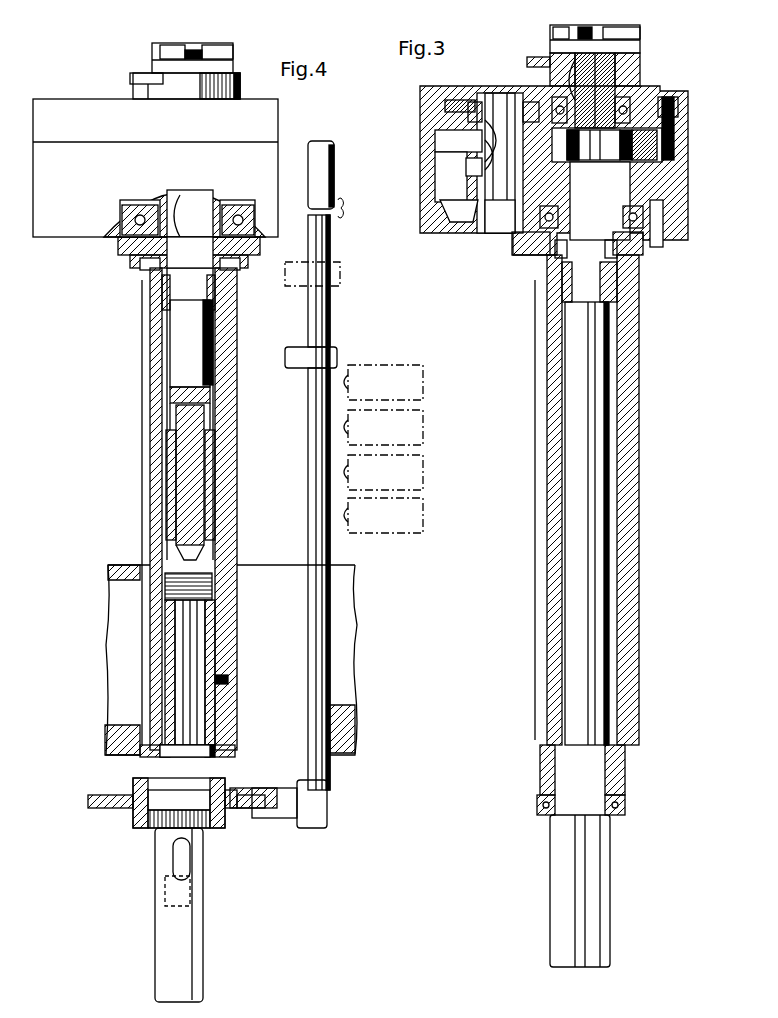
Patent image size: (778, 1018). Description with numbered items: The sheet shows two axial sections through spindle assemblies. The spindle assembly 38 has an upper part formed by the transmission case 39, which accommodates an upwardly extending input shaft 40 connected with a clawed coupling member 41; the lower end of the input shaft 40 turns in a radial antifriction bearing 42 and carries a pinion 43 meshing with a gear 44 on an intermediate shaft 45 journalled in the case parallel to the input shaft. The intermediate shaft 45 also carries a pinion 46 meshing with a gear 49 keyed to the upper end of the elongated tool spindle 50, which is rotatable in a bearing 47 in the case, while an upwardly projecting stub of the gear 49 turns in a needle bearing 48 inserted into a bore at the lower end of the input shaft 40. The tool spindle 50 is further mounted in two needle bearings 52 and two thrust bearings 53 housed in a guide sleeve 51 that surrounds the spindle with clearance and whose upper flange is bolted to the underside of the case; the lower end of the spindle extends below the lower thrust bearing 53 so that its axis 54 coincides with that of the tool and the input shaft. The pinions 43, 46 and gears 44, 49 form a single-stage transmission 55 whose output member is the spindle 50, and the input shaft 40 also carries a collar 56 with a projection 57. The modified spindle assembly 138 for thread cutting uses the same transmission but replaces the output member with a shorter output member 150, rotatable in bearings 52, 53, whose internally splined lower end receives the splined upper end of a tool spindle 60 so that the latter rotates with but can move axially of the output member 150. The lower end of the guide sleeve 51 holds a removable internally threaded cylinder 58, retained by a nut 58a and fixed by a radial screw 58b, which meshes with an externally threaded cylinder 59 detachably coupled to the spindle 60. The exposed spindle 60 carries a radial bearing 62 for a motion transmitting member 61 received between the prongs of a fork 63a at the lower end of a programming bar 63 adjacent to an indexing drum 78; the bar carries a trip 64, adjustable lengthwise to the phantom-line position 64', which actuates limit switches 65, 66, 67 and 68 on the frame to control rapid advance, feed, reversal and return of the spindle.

In FIG. 3, the spindle assembly 38 is at (533, 292).
In FIG. 4, the transmission case 39 is at (85, 197).
In FIG. 3, the transmission case 39 is at (684, 198).
In FIG. 3, the input shaft 40 is at (615, 78).
In FIG. 4, the clawed coupling member 41 is at (233, 52).
In FIG. 3, the clawed coupling member 41 is at (640, 30).
In FIG. 3, the radial antifriction bearing 42 is at (680, 105).
In FIG. 3, the pinion 43 is at (640, 152).
In FIG. 3, the gear 44 is at (435, 140).
In FIG. 3, the intermediate shaft 45 is at (495, 104).
In FIG. 3, the pinion 46 is at (466, 176).
In FIG. 3, the bearing 47 is at (660, 219).
In FIG. 3, the needle bearing 48 is at (660, 140).
In FIG. 4, the gear 49 is at (255, 205).
In FIG. 3, the gear 49 is at (655, 168).
In FIG. 3, the tool spindle 50 is at (600, 371).
In FIG. 4, the guide sleeve 51 is at (237, 427).
In FIG. 3, the guide sleeve 51 is at (640, 410).
In FIG. 4, the needle bearings 52 is at (215, 291).
In FIG. 3, the needle bearings 52 is at (620, 291).
In FIG. 4, the thrust bearings 53 is at (256, 242).
In FIG. 3, the thrust bearings 53 is at (645, 264).
In FIG. 3, the axis 54 is at (590, 344).
In FIG. 3, the single-stage transmission 55 is at (470, 193).
In FIG. 4, the collar 56 is at (240, 93).
In FIG. 3, the collar 56 is at (640, 64).
In FIG. 4, the projection 57 is at (130, 76).
In FIG. 3, the projection 57 is at (527, 60).
In FIG. 4, the internally threaded cylinder 58 is at (170, 645).
In FIG. 4, the nut 58a is at (150, 750).
In FIG. 4, the radial screw 58b is at (228, 679).
In FIG. 4, the externally threaded cylinder 59 is at (170, 605).
In FIG. 4, the tool spindle 60 is at (180, 705).
In FIG. 4, the motion transmitting member 61 is at (240, 808).
In FIG. 4, the radial bearing 62 is at (230, 790).
In FIG. 4, the programming bar 63 is at (312, 773).
In FIG. 4, the fork 63a is at (290, 818).
In FIG. 4, the trip 64 is at (330, 465).
In FIG. 4, the phantom-line position 64' is at (334, 269).
In FIG. 4, the limit switch 65 is at (420, 383).
In FIG. 4, the limit switch 66 is at (420, 429).
In FIG. 4, the limit switch 67 is at (420, 471).
In FIG. 4, the limit switch 68 is at (420, 517).
In FIG. 4, the indexing drum 78 is at (355, 668).
In FIG. 4, the modified spindle assembly 138 is at (142, 462).
In FIG. 4, the output member 150 is at (178, 344).